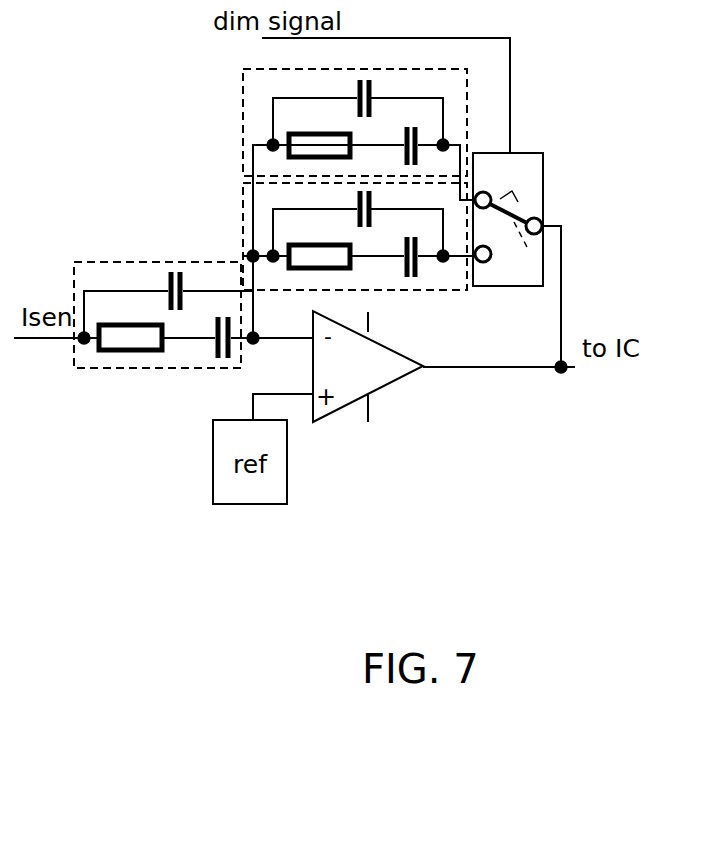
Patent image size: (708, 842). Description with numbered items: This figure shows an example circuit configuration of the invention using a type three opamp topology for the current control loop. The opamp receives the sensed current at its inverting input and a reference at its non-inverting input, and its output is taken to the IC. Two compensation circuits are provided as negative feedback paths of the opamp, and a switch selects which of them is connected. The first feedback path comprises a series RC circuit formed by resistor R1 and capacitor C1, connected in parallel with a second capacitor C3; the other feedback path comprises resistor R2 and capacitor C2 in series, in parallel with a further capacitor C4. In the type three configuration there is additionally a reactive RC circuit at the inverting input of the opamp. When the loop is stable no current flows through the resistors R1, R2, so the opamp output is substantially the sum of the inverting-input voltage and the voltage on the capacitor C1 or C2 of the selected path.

The resistor R1 is at (339, 156).
The capacitor C1 is at (432, 153).
The second capacitor C3 is at (358, 110).
The resistor R2 is at (339, 268).
The capacitor C2 is at (433, 264).
The second capacitor C4 is at (358, 219).